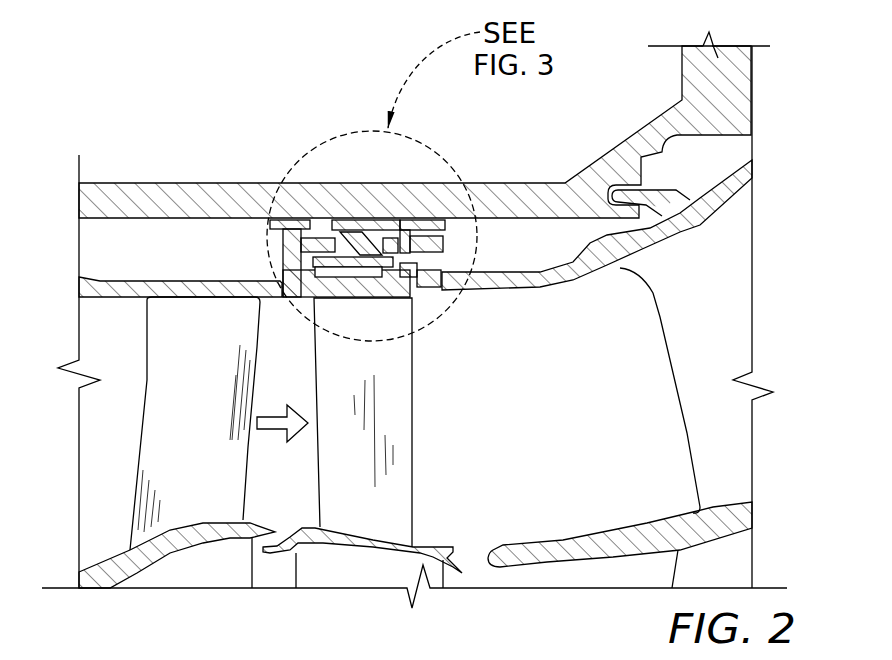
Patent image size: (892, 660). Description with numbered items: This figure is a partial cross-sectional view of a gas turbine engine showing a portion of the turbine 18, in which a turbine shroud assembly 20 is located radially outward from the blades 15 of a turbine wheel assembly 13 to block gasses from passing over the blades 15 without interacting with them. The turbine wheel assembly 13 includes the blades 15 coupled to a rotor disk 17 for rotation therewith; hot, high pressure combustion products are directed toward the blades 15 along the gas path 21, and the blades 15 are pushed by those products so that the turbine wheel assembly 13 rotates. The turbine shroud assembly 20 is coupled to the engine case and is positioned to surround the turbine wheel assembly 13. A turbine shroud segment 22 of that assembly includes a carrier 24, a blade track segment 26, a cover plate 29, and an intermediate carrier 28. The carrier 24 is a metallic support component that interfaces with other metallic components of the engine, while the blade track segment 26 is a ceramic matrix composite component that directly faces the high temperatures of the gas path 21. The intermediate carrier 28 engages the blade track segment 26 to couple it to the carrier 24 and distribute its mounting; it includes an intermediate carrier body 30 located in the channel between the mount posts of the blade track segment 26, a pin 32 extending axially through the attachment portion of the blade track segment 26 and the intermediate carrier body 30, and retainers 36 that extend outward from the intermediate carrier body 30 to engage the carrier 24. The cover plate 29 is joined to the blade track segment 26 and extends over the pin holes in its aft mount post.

The turbine wheel assembly 13 is at (498, 433).
The blades 15 is at (412, 403).
The rotor disk 17 is at (428, 548).
The turbine 18 is at (113, 125).
The turbine shroud assembly 20 is at (482, 200).
The gas path 21 is at (297, 397).
The turbine shroud segment 22 is at (478, 237).
The carrier 24 is at (287, 213).
The blade track segment 26 is at (377, 302).
The intermediate carrier 28 is at (307, 247).
The cover plate 29 is at (405, 287).
The intermediate carrier body 30 is at (372, 247).
The pin 32 is at (303, 260).
The retainers 36 is at (360, 222).